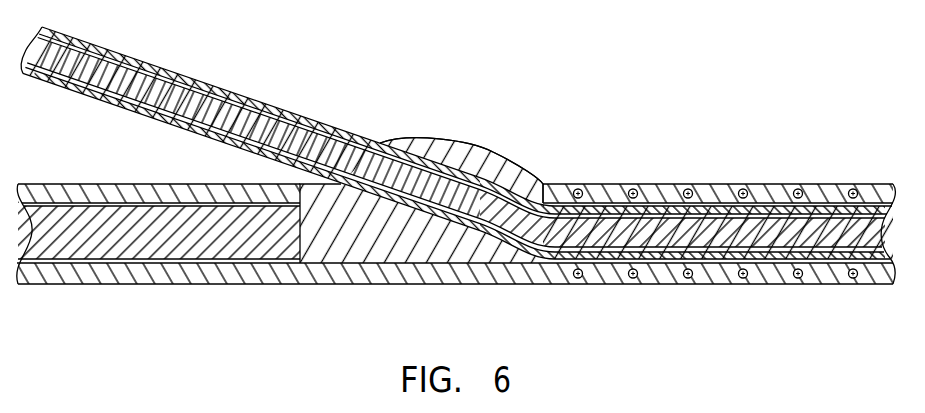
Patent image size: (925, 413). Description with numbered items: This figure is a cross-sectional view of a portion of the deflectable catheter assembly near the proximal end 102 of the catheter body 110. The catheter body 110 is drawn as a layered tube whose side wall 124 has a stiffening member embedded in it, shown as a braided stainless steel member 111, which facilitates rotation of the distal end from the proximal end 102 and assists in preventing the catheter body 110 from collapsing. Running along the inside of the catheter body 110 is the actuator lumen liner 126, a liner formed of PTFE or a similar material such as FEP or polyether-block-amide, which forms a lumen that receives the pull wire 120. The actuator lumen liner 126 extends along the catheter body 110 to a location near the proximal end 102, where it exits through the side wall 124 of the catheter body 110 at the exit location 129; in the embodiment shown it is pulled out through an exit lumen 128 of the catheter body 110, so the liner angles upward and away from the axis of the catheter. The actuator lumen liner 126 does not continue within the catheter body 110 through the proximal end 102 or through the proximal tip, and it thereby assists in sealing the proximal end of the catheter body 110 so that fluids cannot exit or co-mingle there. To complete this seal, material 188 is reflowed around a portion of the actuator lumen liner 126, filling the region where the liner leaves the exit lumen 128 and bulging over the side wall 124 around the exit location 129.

The proximal end 102 is at (134, 285).
The catheter body 110 is at (878, 184).
The braided stainless steel member 111 is at (689, 184).
The pull wire 120 is at (763, 238).
The side wall 124 is at (776, 184).
The actuator lumen liner 126 is at (222, 89).
The exit lumen 128 is at (380, 141).
The exit location 129 is at (479, 107).
The reflowed material 188 is at (494, 150).